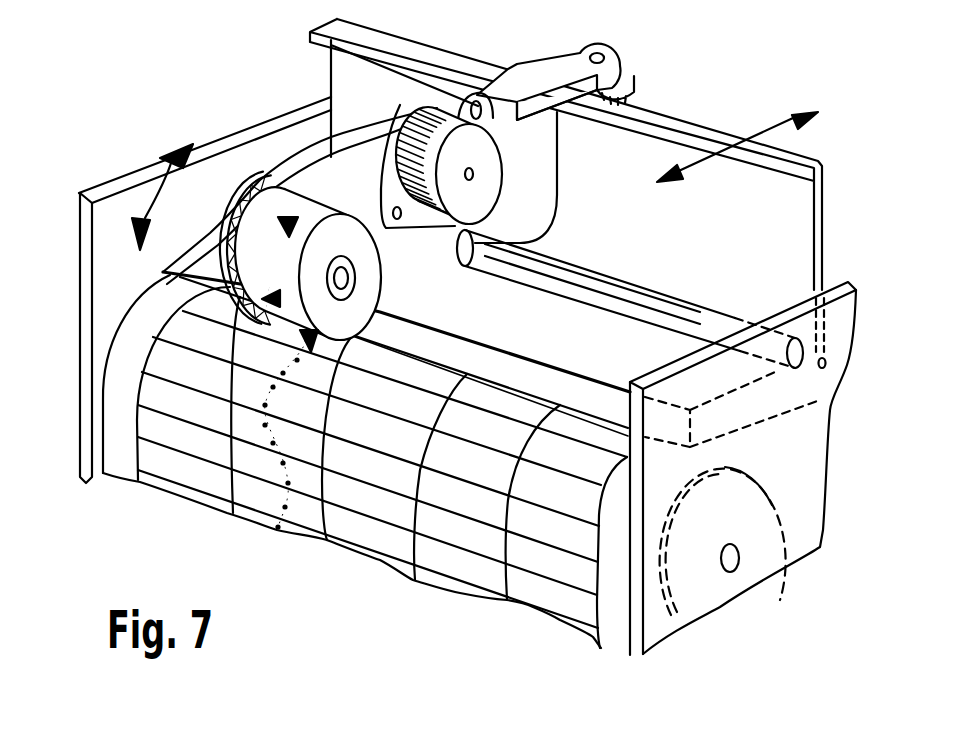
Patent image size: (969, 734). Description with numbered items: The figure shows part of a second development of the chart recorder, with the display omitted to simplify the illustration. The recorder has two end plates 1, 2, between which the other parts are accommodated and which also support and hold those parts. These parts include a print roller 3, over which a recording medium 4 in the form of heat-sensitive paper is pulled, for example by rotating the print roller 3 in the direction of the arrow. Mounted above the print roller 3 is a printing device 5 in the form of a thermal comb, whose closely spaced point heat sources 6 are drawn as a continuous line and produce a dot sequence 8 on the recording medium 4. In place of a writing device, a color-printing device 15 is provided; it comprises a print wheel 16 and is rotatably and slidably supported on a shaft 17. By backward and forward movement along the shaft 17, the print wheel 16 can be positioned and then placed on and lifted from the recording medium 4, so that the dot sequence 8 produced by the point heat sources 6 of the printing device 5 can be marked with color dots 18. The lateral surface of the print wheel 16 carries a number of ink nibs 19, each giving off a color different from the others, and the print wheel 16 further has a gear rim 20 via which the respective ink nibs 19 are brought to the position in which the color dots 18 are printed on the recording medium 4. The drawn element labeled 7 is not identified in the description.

The end plate 1 is at (113, 184).
The end plate 2 is at (838, 290).
The print roller 3 is at (758, 533).
The recording medium 4 is at (435, 545).
The printing device 5 is at (590, 312).
The point heat sources 6 is at (163, 265).
The drum surface 7 is at (508, 548).
The dot sequence 8 is at (400, 360).
The color-printing device 15 is at (347, 170).
The print wheel 16 is at (273, 168).
The shaft 17 is at (717, 335).
The color dots 18 is at (273, 443).
The ink nibs 19 is at (352, 203).
The gear rim 20 is at (152, 288).